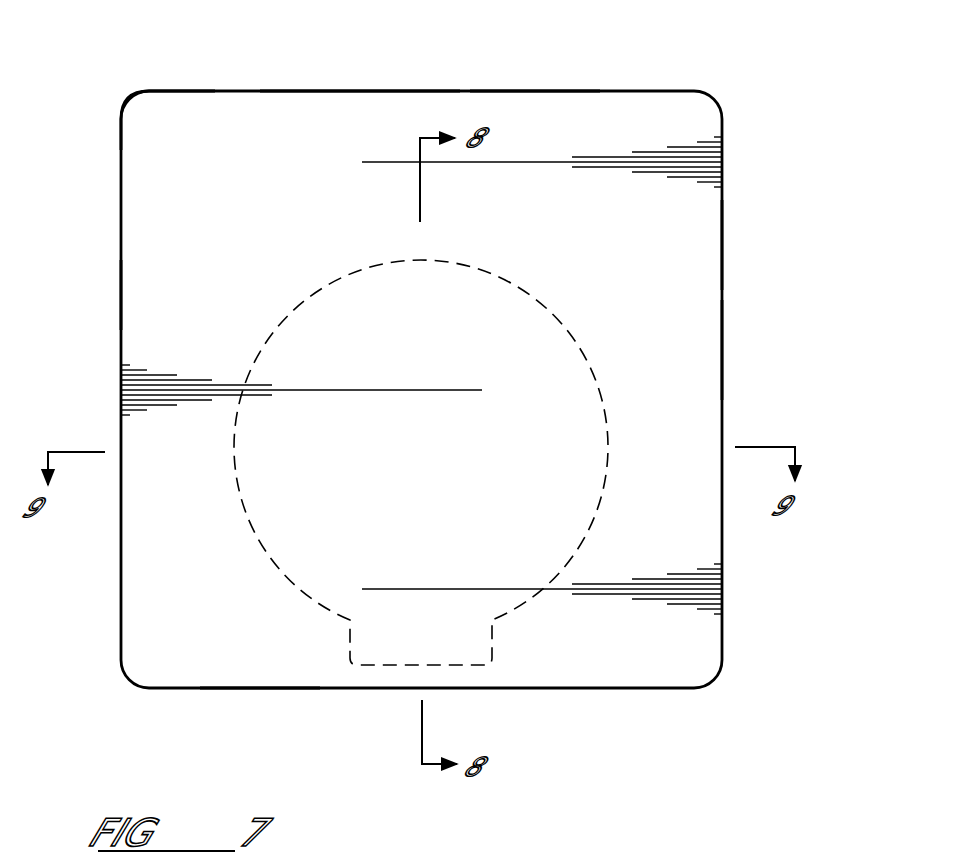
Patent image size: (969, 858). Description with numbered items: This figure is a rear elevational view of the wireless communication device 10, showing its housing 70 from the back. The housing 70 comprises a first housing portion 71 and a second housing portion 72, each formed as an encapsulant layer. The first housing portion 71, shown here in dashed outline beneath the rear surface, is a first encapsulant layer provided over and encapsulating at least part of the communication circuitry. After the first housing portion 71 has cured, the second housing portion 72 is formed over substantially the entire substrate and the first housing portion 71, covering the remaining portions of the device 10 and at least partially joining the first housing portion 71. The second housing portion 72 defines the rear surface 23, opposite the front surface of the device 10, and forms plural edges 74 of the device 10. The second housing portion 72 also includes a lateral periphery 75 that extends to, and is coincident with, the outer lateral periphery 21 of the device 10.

The wireless communication device 10 is at (702, 40).
The outer lateral periphery 21 is at (216, 90).
The surface 23 is at (240, 203).
The housing 70 is at (775, 191).
The first housing portion 71 is at (542, 297).
The second housing portion 72 is at (725, 266).
The edges 74 is at (525, 90).
The lateral periphery 75 is at (355, 90).